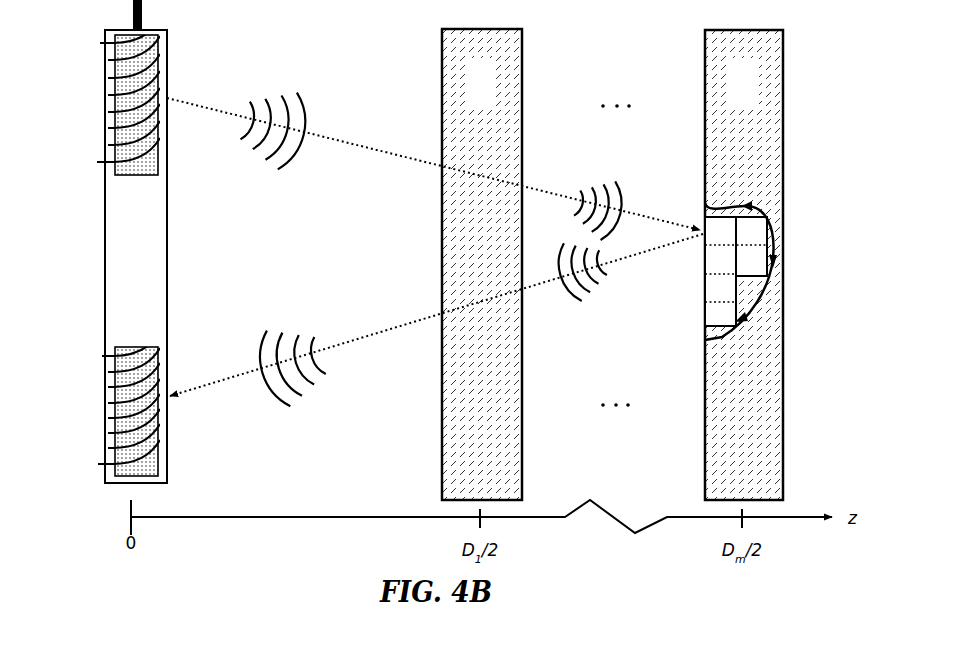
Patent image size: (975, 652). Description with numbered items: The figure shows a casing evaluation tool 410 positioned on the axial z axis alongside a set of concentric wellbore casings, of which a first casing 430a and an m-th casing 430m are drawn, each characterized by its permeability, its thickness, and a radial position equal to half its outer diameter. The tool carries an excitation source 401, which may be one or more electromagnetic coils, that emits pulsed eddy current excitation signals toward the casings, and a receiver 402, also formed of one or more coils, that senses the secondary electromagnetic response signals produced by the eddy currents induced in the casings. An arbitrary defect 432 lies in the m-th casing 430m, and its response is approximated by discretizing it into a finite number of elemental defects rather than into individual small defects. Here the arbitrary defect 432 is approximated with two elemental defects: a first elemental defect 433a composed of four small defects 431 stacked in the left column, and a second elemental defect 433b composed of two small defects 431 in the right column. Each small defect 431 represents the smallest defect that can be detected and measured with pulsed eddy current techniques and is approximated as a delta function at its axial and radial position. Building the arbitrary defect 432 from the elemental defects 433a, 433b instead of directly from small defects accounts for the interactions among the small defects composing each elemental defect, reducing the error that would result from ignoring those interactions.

The casing evaluation tool 410 is at (103, 30).
The excitation source 401 is at (115, 118).
The receiver 402 is at (115, 411).
The casing 430a is at (523, 459).
The casing 430m is at (784, 466).
The small defect 431 is at (702, 263).
The arbitrary defect 432 is at (752, 206).
The elemental defect 433a is at (746, 319).
The elemental defect 433b is at (777, 263).